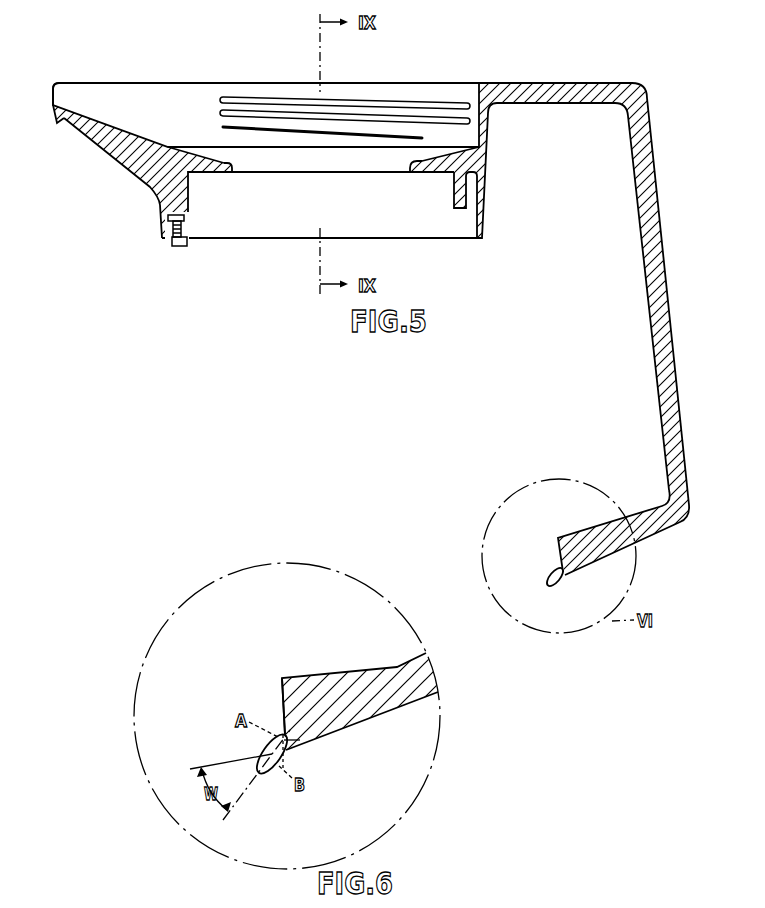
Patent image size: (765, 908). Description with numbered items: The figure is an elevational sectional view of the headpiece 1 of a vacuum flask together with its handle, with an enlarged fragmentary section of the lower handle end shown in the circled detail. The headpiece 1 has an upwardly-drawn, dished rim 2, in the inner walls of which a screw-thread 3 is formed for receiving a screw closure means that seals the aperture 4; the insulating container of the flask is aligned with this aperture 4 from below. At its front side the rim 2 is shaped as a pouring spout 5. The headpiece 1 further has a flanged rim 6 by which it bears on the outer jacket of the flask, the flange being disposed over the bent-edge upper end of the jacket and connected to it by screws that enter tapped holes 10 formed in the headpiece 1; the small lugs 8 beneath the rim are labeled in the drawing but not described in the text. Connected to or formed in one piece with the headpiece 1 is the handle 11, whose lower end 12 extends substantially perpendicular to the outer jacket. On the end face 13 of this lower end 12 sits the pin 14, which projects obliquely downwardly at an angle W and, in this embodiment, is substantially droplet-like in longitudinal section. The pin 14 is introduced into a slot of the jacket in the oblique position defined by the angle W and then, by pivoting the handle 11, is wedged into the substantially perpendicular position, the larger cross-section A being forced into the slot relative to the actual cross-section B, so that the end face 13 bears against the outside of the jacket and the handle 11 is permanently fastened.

In FIG. 5, the headpiece 1 is at (429, 78).
In FIG. 5, the dished rim 2 is at (195, 100).
In FIG. 5, the screw-thread 3 is at (355, 105).
In FIG. 5, the aperture 4 is at (368, 174).
In FIG. 5, the pouring spout 5 is at (68, 92).
In FIG. 5, the flanged rim 6 is at (484, 205).
In FIG. 5, the lugs 8 is at (210, 175).
In FIG. 5, the tapped holes 10 is at (175, 247).
In FIG. 5, the handle 11 is at (650, 197).
In FIG. 5, the lower end of the handle 12 is at (600, 549).
In FIG. 6, the lower end of the handle 12 is at (378, 706).
In FIG. 6, the end face 13 is at (283, 712).
In FIG. 5, the pin 14 is at (548, 572).
In FIG. 6, the pin 14 is at (267, 757).